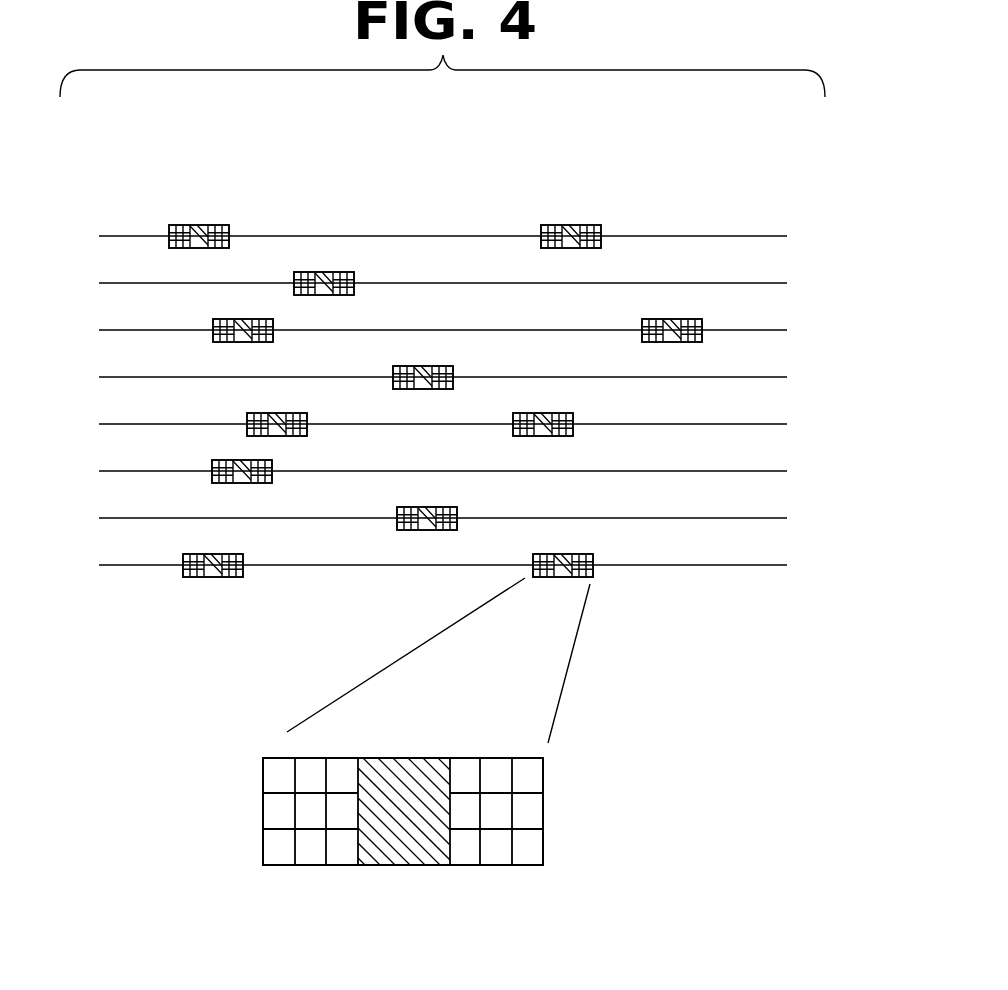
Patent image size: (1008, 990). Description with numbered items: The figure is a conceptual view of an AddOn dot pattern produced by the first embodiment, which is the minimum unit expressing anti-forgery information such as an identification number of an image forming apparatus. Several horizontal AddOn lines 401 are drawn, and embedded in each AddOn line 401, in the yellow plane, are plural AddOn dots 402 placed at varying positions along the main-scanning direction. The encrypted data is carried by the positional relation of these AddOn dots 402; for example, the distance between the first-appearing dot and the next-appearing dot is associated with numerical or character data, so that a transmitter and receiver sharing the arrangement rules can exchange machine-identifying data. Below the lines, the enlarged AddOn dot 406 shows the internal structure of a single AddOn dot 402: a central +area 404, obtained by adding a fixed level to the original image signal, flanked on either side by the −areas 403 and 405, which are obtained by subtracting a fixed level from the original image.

The AddOn line 401 is at (417, 233).
The AddOn dot 402 is at (211, 216).
The −area 403 is at (303, 922).
The +area 404 is at (425, 922).
The −area 405 is at (546, 922).
The enlarged AddOn dot 406 is at (543, 798).